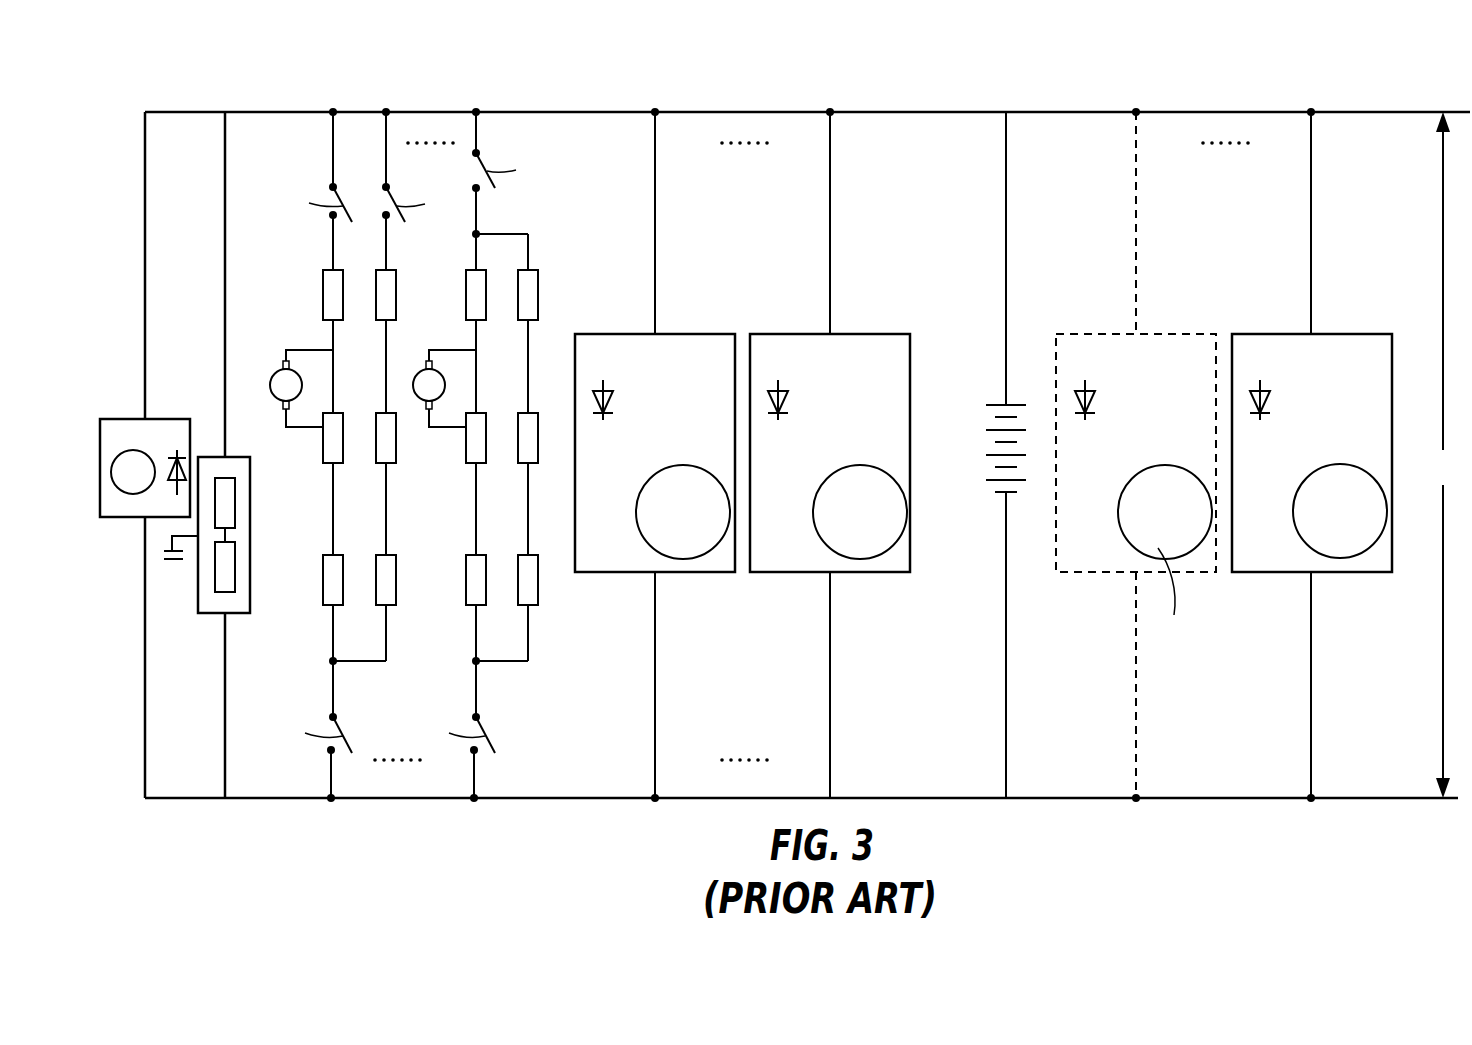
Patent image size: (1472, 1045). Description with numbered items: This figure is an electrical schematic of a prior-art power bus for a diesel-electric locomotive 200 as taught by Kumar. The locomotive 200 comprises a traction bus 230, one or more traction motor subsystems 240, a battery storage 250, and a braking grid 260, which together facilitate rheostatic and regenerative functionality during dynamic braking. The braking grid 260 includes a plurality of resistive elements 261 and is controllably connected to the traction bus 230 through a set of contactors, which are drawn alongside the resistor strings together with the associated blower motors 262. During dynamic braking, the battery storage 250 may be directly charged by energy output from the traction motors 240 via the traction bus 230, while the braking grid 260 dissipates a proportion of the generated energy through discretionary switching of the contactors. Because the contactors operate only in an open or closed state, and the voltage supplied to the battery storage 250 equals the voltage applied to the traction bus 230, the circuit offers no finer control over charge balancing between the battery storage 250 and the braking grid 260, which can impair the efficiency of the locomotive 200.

The diesel-electric locomotive 200 is at (1228, 70).
The traction bus 230 is at (1443, 455).
The traction motor subsystem 240 is at (909, 358).
The battery storage 250 is at (986, 455).
The braking grid 260 is at (392, 96).
The resistive element 261 is at (331, 268).
The blower motor 262 is at (309, 350).